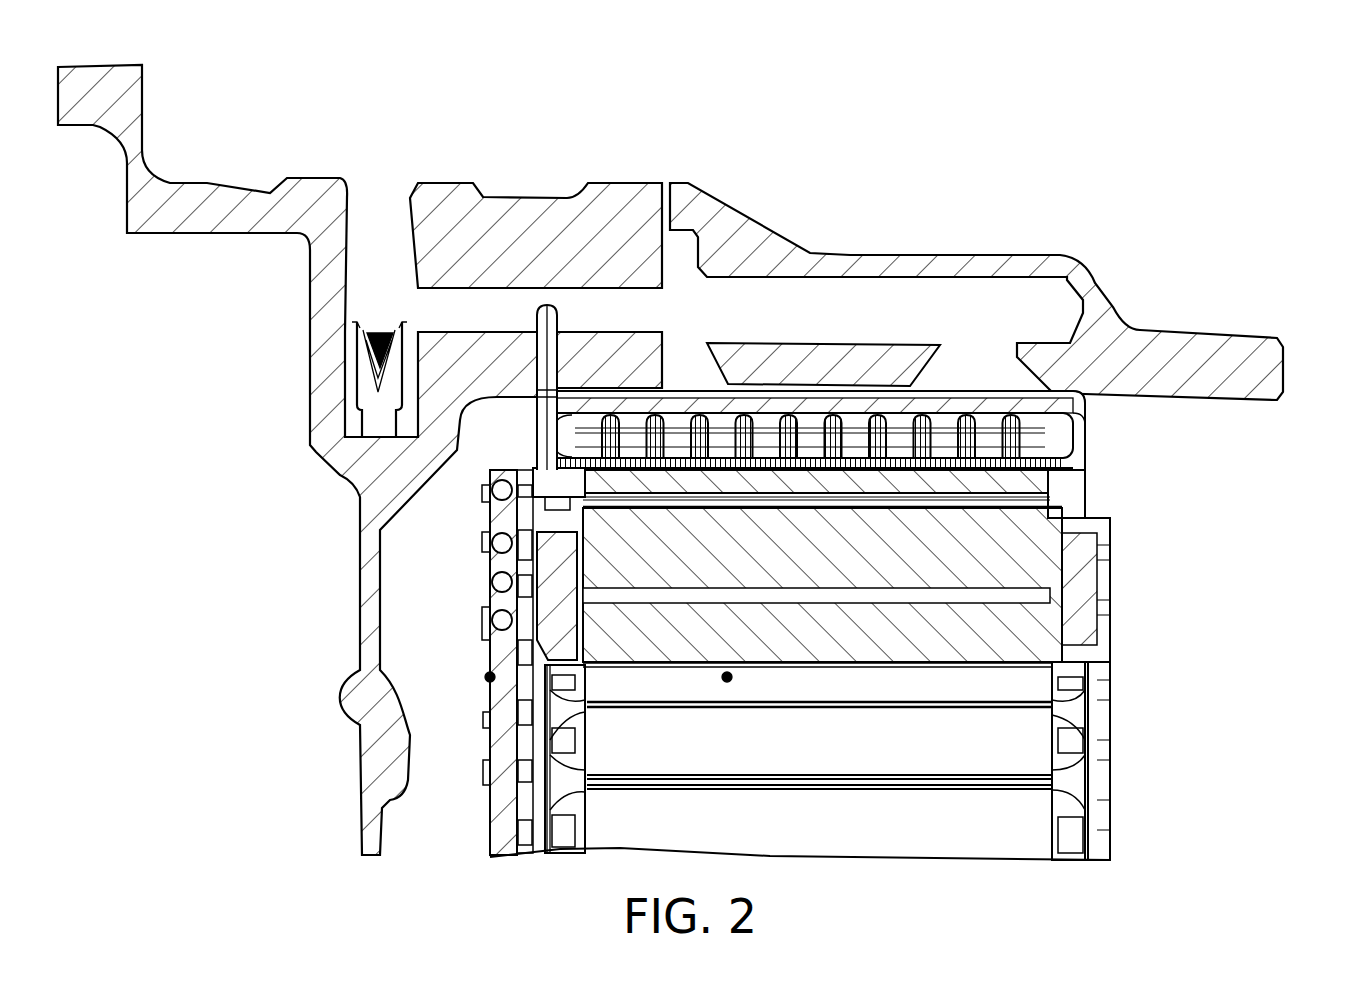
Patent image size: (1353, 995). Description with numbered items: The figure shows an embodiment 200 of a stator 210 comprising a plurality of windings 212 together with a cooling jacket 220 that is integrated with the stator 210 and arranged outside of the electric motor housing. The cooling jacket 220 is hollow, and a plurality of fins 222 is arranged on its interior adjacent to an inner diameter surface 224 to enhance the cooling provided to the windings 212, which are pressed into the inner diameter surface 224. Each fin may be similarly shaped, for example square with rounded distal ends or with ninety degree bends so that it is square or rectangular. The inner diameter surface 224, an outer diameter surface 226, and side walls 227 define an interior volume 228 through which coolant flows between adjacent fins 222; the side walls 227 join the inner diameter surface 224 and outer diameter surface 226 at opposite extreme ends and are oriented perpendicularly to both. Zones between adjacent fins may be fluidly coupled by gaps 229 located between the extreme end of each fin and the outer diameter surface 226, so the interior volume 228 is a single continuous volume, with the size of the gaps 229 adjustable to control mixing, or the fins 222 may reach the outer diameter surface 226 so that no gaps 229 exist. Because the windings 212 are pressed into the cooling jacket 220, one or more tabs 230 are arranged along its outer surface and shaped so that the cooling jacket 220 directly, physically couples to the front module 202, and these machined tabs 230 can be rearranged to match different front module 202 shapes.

The embodiment 200 is at (1093, 138).
The front module 202 is at (467, 340).
The stator 210 is at (1087, 652).
The windings 212 is at (1020, 482).
The cooling jacket 220 is at (810, 393).
The plurality of fins 222 is at (905, 402).
The inner diameter surface 224 is at (1037, 472).
The outer diameter surface 226 is at (965, 404).
The side walls 227 is at (1086, 432).
The interior volume 228 is at (685, 432).
The gaps 229 is at (653, 410).
The tabs 230 is at (537, 326).